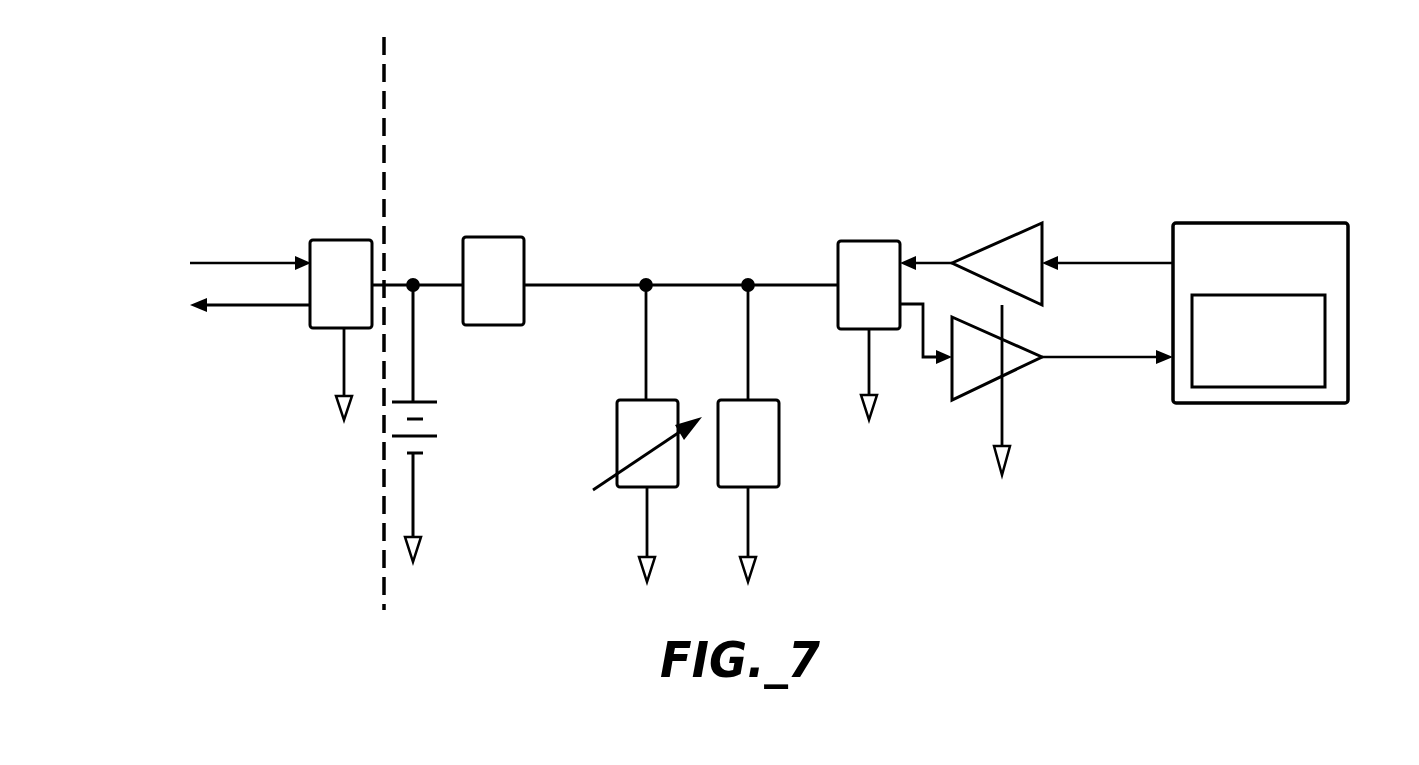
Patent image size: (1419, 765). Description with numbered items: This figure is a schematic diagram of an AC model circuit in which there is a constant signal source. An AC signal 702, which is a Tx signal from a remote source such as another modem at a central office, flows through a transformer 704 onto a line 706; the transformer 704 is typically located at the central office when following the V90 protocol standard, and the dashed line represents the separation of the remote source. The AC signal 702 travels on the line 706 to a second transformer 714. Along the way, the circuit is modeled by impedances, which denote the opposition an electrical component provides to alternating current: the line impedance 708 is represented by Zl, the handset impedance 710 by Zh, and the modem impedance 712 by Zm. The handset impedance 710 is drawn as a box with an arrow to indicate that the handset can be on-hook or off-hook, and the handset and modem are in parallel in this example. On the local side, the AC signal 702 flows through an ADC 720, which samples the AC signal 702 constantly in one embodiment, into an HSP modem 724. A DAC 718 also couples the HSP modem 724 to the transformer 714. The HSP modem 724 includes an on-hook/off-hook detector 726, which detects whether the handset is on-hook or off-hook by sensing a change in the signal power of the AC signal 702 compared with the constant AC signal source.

The AC signal 702 is at (252, 213).
The transformer 704 is at (343, 240).
The line 706 is at (393, 282).
The line impedance 708 is at (493, 237).
The handset impedance 710 is at (652, 400).
The modem impedance 712 is at (753, 490).
The transformer 714 is at (870, 241).
The DAC 718 is at (987, 247).
The ADC 720 is at (975, 389).
The HSP modem 724 is at (1262, 223).
The on-hook/off-hook detector 726 is at (1325, 342).